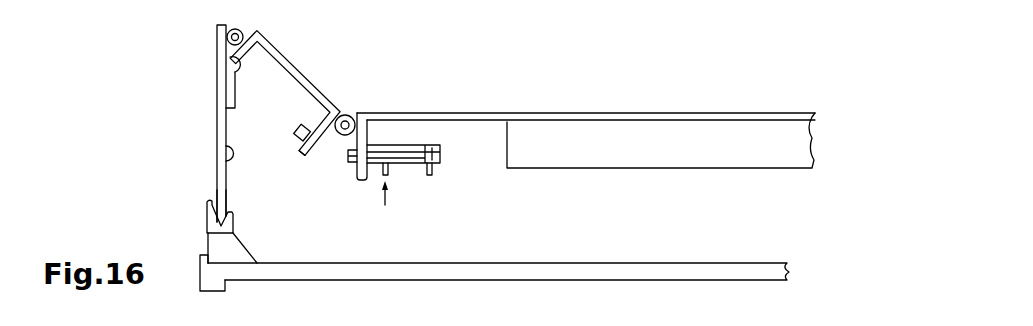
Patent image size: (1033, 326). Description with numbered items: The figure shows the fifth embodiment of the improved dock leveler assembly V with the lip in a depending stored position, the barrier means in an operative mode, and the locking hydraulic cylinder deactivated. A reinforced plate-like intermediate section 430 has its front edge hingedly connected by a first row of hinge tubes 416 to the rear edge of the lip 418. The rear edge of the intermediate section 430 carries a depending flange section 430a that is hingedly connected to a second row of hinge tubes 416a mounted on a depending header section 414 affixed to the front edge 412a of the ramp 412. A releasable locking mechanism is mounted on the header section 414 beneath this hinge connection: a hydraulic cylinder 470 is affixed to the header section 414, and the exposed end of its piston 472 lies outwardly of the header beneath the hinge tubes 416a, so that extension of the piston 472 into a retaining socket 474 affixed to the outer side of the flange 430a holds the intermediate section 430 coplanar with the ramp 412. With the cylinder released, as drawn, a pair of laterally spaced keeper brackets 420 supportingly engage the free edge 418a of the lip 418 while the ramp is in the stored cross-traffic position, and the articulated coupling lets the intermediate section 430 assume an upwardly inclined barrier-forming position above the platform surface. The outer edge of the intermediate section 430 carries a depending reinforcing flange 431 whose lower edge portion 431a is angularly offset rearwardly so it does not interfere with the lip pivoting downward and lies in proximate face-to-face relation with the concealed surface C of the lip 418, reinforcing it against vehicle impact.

The ramp 412 is at (553, 116).
The front edge of the ramp 412a is at (413, 114).
The header section 414 is at (363, 183).
The hinge tubes 416 is at (233, 29).
The hinge tubes 416a is at (347, 115).
The lip 418 is at (205, 106).
The free edge of the lip 418a is at (220, 196).
The keeper brackets 420 is at (203, 226).
The intermediate section 430 is at (305, 48).
The depending flange section 430a is at (300, 158).
The reinforcing flange 431 is at (230, 68).
The lower edge portion of the reinforcing flange 431a is at (229, 84).
The hydraulic cylinder 470 is at (442, 160).
The piston 472 is at (350, 154).
The retaining socket 474 is at (296, 128).
The concealed surface of the lip C is at (228, 153).
The dock leveler assembly V is at (648, 88).